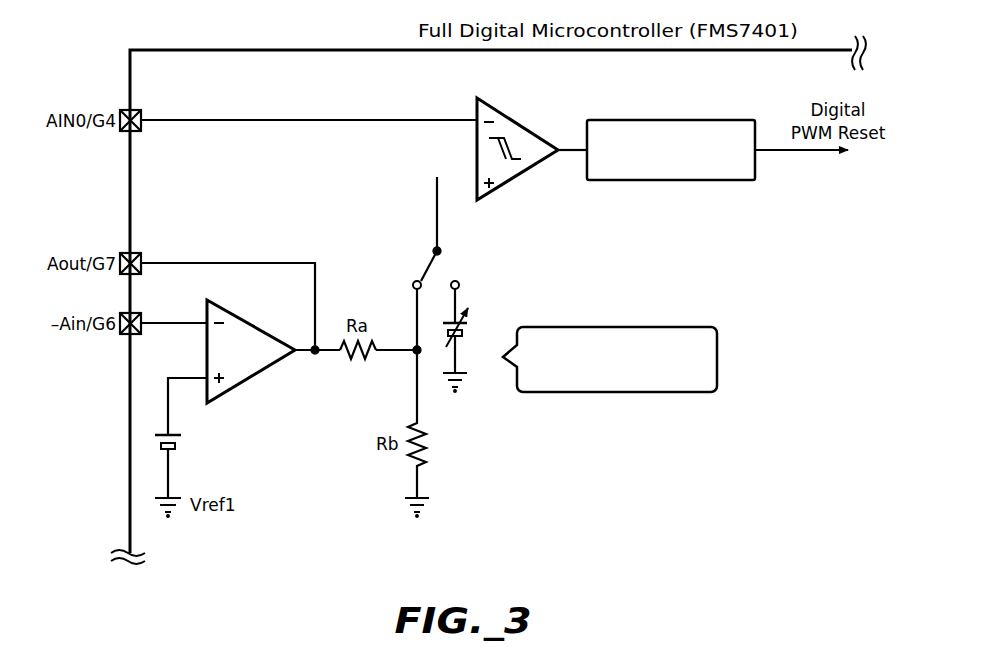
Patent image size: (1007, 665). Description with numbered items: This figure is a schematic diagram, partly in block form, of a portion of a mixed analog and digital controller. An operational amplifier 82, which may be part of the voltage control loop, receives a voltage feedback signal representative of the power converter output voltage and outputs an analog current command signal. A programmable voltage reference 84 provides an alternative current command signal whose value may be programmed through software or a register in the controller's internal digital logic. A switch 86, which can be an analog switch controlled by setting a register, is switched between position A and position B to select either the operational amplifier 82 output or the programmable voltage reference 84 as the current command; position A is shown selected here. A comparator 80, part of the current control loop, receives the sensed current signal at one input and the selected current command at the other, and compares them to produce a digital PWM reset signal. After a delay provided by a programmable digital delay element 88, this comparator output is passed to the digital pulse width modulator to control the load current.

The comparator 80 is at (520, 118).
The operational amplifier 82 is at (237, 312).
The programmable voltage reference 84 is at (600, 392).
The switch 86 is at (425, 266).
The programmable digital delay element 88 is at (645, 180).